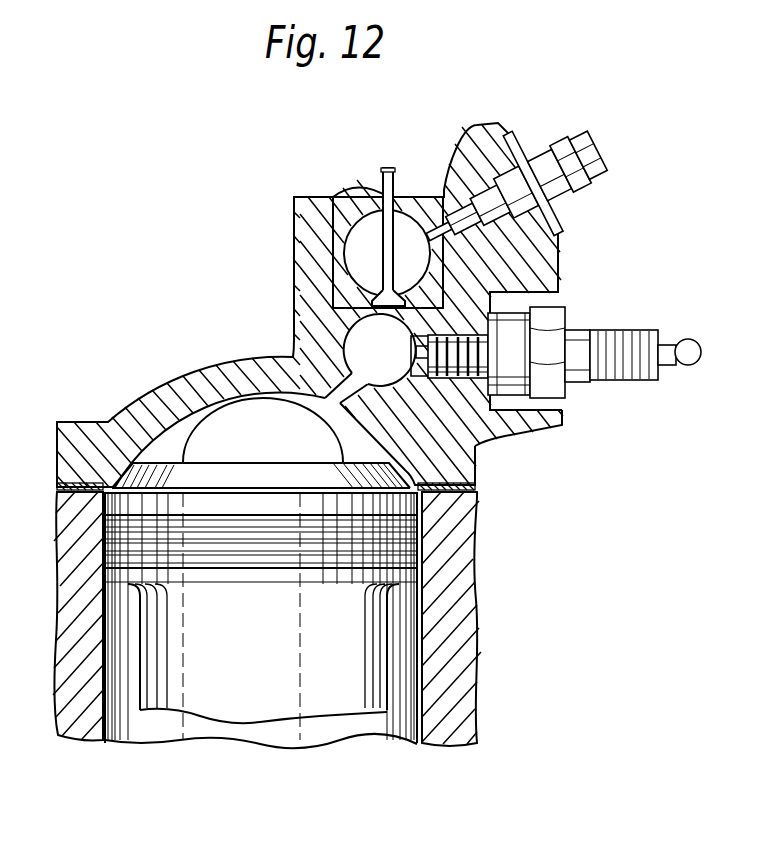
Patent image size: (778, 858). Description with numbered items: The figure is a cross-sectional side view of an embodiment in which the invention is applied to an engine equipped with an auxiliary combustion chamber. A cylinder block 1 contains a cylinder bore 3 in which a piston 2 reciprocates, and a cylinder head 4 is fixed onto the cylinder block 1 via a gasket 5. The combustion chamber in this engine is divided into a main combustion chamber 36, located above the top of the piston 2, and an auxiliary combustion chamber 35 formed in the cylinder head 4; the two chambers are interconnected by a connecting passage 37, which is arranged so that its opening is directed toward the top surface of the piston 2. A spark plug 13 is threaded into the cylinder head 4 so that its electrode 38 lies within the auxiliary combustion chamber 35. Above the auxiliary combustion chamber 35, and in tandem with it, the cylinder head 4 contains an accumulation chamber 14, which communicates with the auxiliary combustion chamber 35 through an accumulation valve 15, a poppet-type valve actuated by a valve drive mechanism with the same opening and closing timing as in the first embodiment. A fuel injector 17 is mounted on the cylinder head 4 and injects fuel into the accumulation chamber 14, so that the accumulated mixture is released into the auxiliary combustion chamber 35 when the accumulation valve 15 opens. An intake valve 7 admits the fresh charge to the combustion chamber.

The cylinder block 1 is at (437, 728).
The piston 2 is at (370, 707).
The cylinder bore 3 is at (405, 650).
The cylinder head 4 is at (197, 378).
The gasket 5 is at (475, 488).
The intake valve 7 is at (207, 437).
The spark plug 13 is at (578, 340).
The accumulation chamber 14 is at (417, 253).
The accumulation valve 15 is at (397, 233).
The fuel injector 17 is at (552, 140).
The auxiliary combustion chamber 35 is at (367, 361).
The main combustion chamber 36 is at (346, 451).
The connecting passage 37 is at (395, 445).
The electrode 38 is at (400, 380).